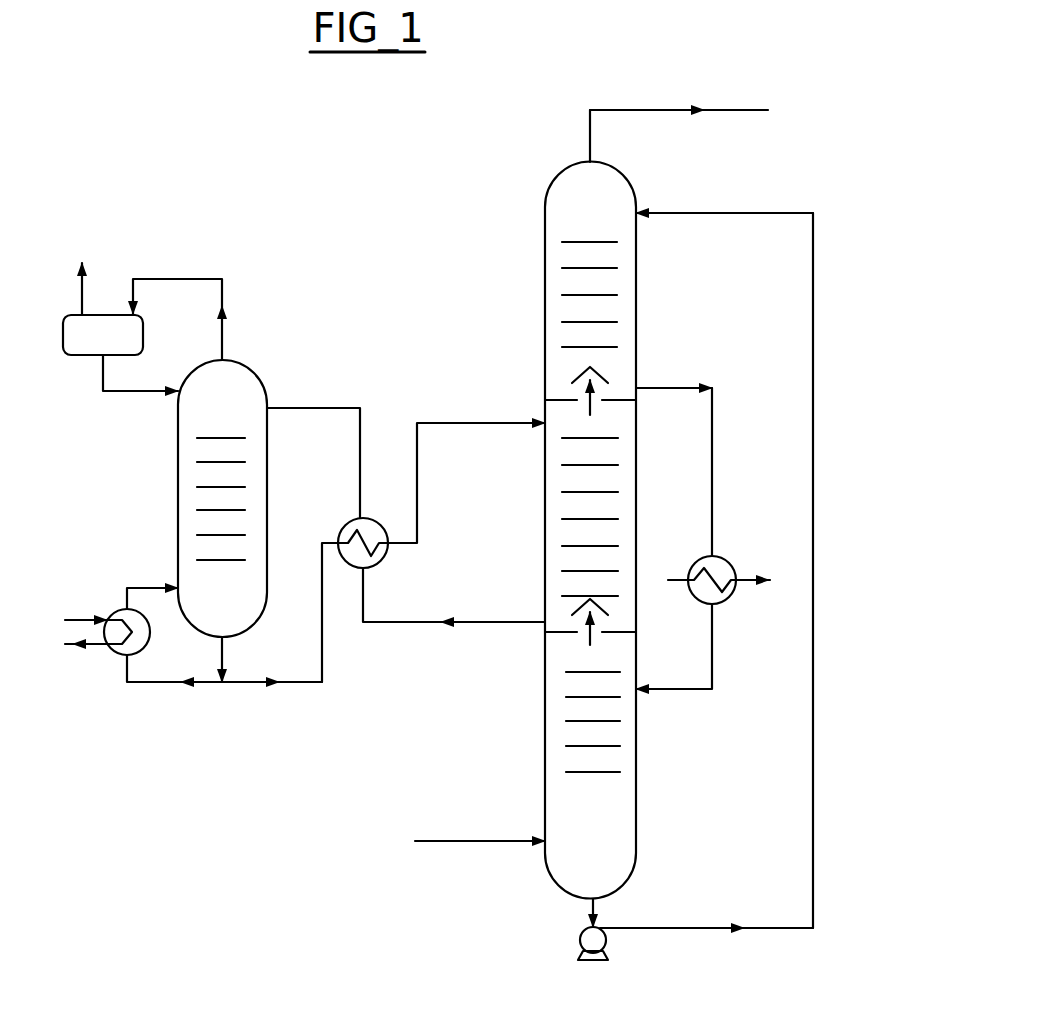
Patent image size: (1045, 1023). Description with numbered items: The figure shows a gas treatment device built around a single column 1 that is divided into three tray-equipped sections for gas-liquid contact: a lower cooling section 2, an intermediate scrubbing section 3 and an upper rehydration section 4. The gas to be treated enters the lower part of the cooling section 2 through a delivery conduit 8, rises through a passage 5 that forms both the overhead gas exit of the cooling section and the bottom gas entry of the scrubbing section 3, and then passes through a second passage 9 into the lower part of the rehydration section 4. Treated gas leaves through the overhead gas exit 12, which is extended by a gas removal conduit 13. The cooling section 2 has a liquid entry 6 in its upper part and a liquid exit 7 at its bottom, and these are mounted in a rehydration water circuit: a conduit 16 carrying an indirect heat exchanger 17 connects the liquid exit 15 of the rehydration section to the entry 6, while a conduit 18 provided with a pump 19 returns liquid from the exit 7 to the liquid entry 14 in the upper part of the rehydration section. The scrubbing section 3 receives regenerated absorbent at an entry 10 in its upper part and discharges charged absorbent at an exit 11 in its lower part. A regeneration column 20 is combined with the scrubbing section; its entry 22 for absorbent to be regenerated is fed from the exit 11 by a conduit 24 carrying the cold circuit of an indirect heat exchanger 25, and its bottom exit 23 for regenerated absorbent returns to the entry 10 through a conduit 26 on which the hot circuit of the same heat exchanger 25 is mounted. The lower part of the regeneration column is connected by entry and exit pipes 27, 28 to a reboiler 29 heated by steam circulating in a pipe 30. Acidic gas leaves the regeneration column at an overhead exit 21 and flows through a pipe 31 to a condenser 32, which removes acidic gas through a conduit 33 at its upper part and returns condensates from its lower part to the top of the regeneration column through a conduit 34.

The column 1 is at (652, 812).
The lower cooling section 2 is at (553, 732).
The intermediate scrubbing section 3 is at (553, 505).
The upper rehydration section 4 is at (545, 282).
The passage 5 is at (578, 648).
The entry for the liquids 6 is at (640, 693).
The exit for the liquids 7 is at (588, 904).
The delivery conduit 8 is at (440, 838).
The passage 9 is at (580, 372).
The entry for the regenerated absorbent liquid 10 is at (537, 430).
The exit for the charged absorbent liquid 11 is at (543, 622).
The overhead gas exit 12 is at (596, 160).
The gas removal conduit 13 is at (660, 108).
The liquid entry 14 is at (640, 216).
The liquid exit 15 is at (640, 386).
The conduit 16 is at (714, 462).
The indirect heat exchanger 17 is at (718, 556).
The conduit 18 is at (815, 466).
The pump 19 is at (608, 945).
The regeneration column 20 is at (262, 378).
The exit for an acidic gas 21 is at (225, 356).
The entry for the absorbent to be regenerated 22 is at (270, 412).
The exit for the regenerated absorbent 23 is at (228, 638).
The conduit 24 is at (393, 625).
The indirect heat exchanger 25 is at (385, 556).
The conduit 26 is at (258, 684).
The entry pipe 27 is at (148, 684).
The exit pipe 28 is at (138, 586).
The reboiler 29 is at (110, 614).
The pipe 30 is at (96, 650).
The pipe 31 is at (172, 277).
The condenser 32 is at (62, 330).
The conduit 33 is at (78, 264).
The conduit 34 is at (117, 394).